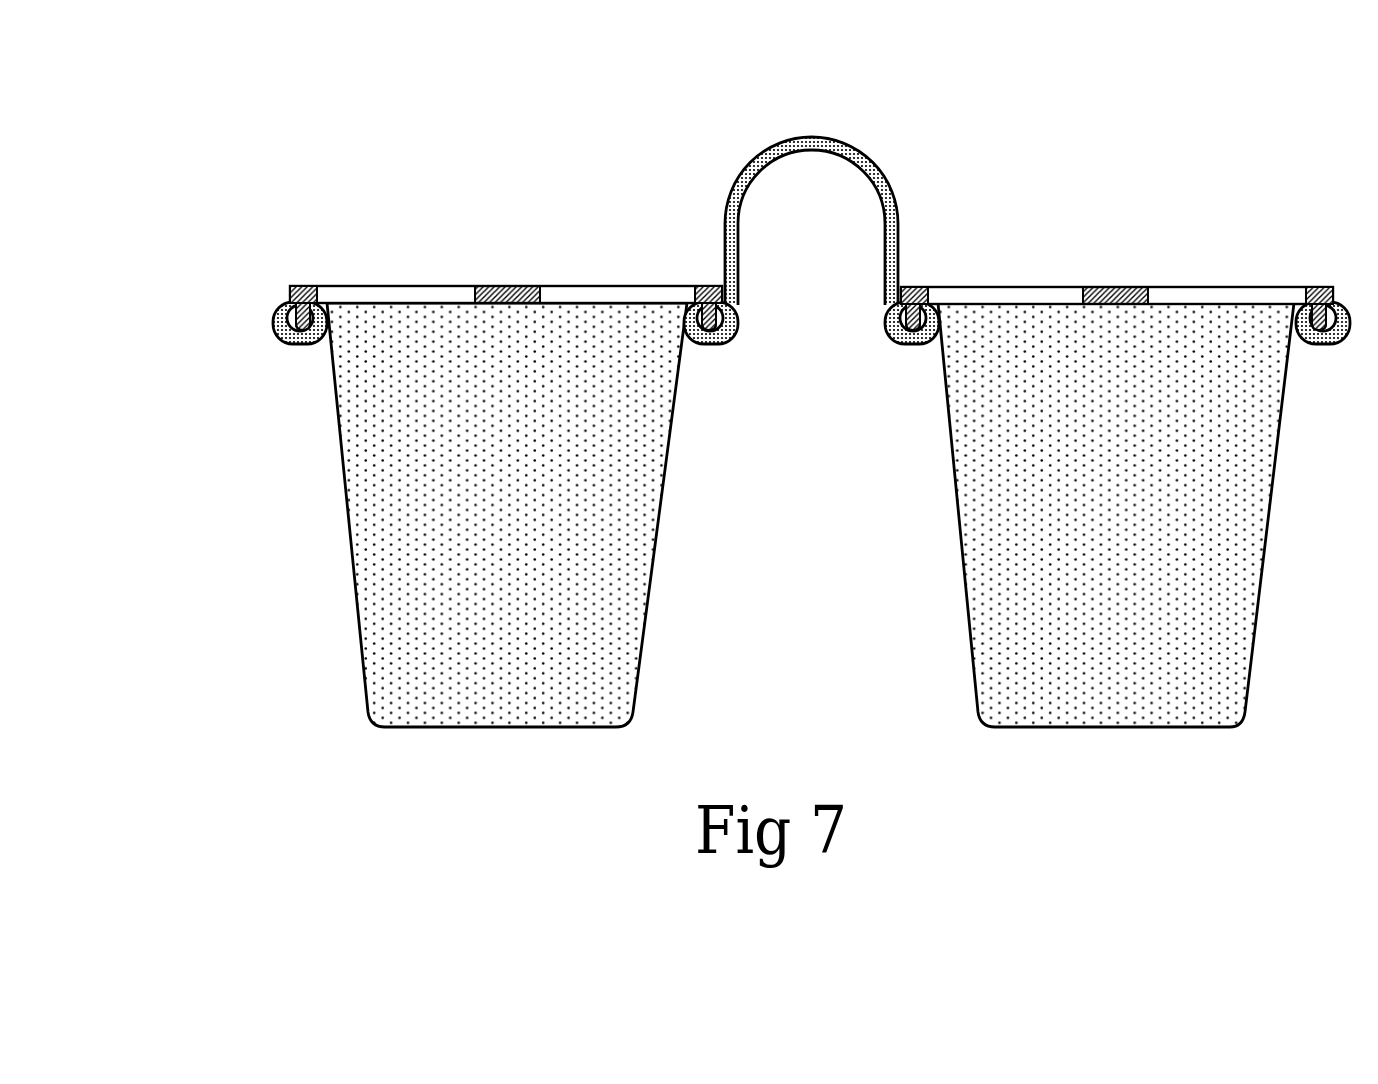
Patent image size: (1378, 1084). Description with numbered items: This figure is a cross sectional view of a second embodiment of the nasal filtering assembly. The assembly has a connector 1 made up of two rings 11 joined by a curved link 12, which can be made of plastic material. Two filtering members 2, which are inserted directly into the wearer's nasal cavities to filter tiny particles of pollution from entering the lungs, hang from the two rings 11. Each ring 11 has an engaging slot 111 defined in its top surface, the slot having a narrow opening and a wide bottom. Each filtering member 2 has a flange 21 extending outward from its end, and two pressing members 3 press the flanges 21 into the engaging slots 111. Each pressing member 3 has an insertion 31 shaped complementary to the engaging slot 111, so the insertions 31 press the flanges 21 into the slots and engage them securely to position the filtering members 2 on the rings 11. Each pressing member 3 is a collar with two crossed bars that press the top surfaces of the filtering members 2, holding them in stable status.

The connector 1 is at (462, 427).
The ring 11 is at (250, 374).
The engaging slot 111 is at (292, 342).
The link 12 is at (766, 152).
The filtering member 2 is at (632, 582).
The flange 21 is at (717, 345).
The pressing member 3 is at (410, 283).
The insertion 31 is at (278, 343).